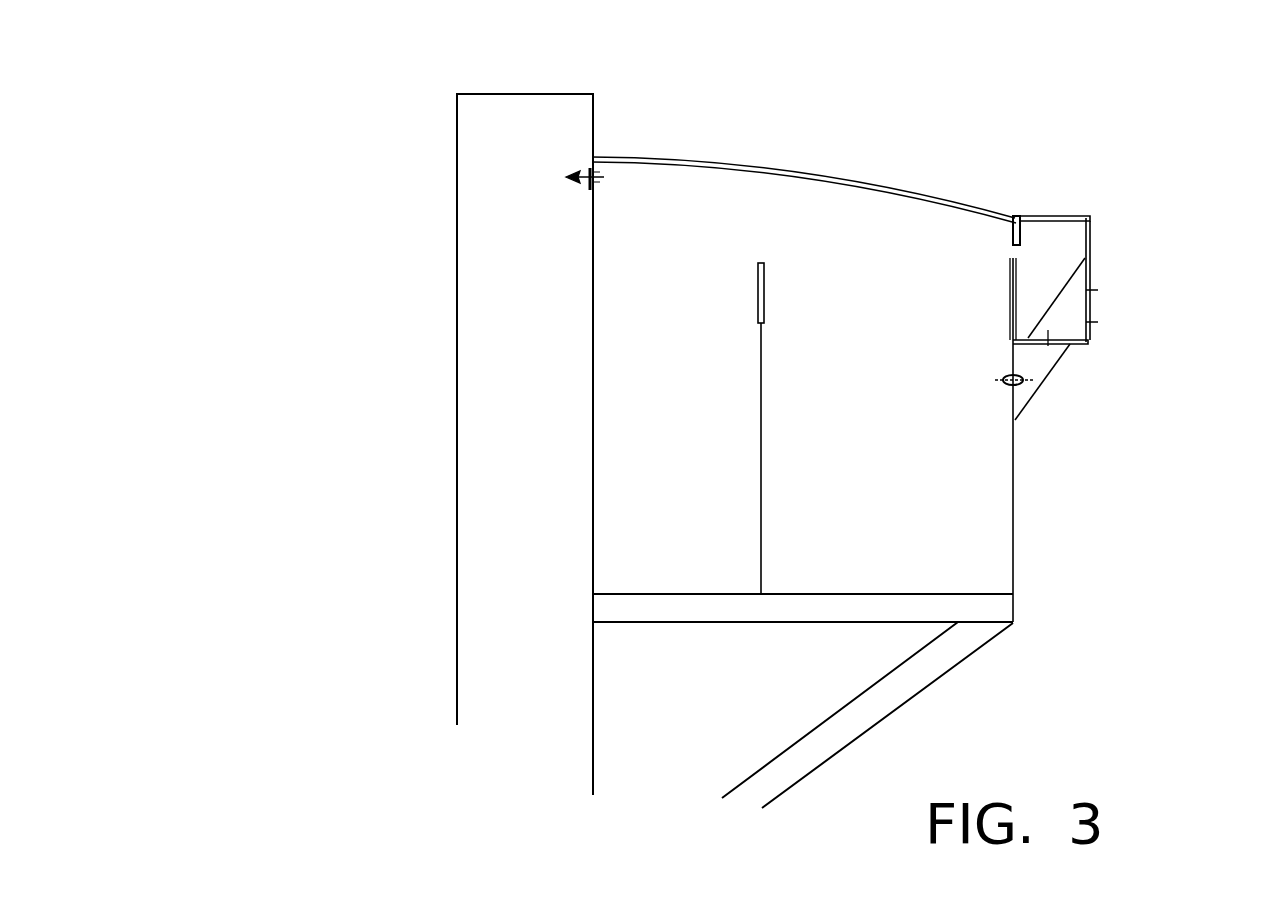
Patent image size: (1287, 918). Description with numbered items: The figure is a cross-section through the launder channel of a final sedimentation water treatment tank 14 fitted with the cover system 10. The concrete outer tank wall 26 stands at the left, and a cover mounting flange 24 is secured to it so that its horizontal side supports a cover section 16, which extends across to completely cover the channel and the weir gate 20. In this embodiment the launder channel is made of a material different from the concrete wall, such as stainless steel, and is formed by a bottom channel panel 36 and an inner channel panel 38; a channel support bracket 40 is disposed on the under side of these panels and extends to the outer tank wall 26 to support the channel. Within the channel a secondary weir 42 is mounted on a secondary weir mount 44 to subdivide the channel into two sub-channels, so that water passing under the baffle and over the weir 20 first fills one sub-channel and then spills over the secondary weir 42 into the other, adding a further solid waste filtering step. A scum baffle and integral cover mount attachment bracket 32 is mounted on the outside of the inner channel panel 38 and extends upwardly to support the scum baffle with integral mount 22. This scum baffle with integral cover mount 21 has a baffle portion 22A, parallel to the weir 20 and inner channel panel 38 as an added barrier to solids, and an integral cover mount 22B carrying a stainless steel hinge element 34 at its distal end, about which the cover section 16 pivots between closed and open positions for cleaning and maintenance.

The cover system 10 is at (372, 122).
The water treatment tank 14 is at (557, 620).
The cover section 16 is at (786, 172).
The weir gate 20 is at (1013, 283).
The scum baffle with integral cover mount 21 is at (1162, 210).
The scum baffle with integral mount 22 is at (1087, 344).
The baffle portion 22A is at (1090, 218).
The integral cover mount 22B is at (1055, 216).
The cover mounting flange 24 is at (612, 165).
The outer tank wall 26 is at (472, 380).
The scum baffle and integral cover mount attachment bracket 32 is at (1040, 375).
The hinge element 34 is at (1015, 216).
The bottom channel panel 36 is at (797, 613).
The inner channel panel 38 is at (1013, 520).
The channel support bracket 40 is at (913, 680).
The secondary weir 42 is at (765, 307).
The secondary weir mount 44 is at (762, 420).